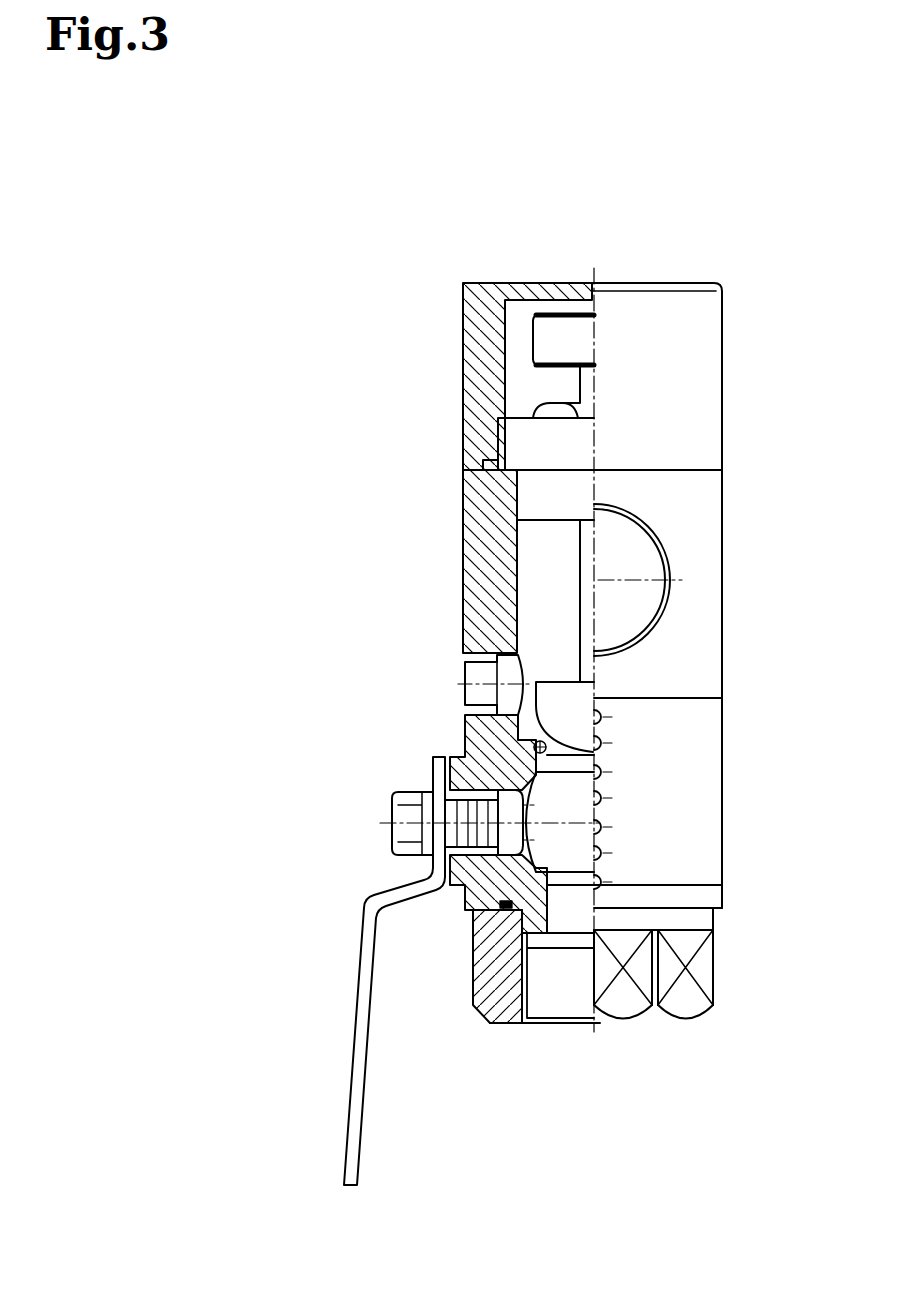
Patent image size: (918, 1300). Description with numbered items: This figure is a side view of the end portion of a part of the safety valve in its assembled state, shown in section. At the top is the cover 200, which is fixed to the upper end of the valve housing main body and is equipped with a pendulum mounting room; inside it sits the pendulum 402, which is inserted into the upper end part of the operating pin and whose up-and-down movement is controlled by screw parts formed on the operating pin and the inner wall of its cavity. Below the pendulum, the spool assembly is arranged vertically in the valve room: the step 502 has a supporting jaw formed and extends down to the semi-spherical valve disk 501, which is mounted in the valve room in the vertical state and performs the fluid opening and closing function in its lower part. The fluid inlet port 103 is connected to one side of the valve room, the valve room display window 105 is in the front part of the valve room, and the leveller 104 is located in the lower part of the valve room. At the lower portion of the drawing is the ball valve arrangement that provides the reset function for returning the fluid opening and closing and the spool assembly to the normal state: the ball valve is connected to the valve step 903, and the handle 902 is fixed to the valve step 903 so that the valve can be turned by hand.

The cover 200 is at (522, 290).
The pendulum 402 is at (542, 338).
The step 502 is at (585, 590).
The fluid inlet port 103 is at (657, 562).
The valve room display window 105 is at (467, 673).
The semi-spherical valve disk 501 is at (583, 690).
The leveller 104 is at (603, 770).
The valve step 903 is at (390, 803).
The handle 902 is at (358, 1057).